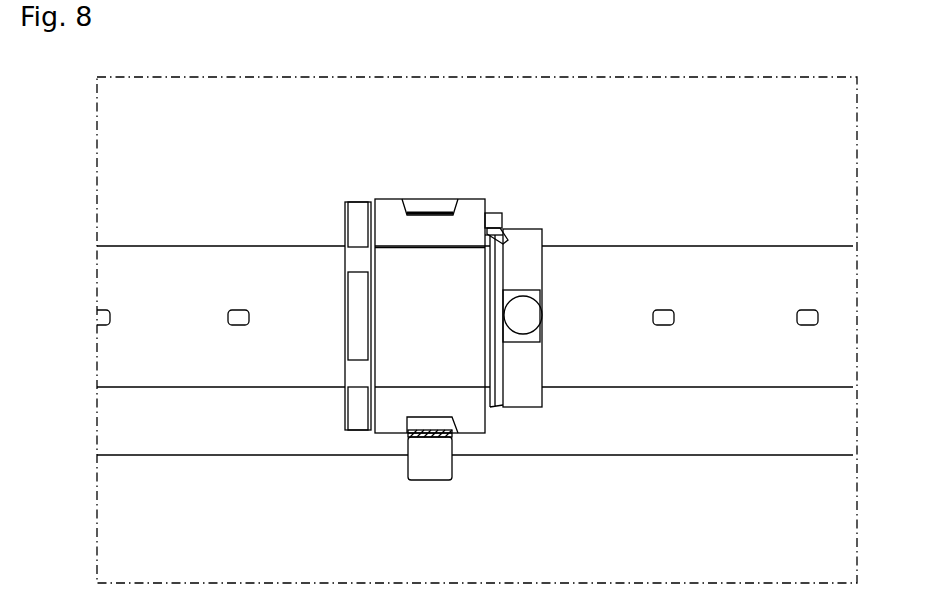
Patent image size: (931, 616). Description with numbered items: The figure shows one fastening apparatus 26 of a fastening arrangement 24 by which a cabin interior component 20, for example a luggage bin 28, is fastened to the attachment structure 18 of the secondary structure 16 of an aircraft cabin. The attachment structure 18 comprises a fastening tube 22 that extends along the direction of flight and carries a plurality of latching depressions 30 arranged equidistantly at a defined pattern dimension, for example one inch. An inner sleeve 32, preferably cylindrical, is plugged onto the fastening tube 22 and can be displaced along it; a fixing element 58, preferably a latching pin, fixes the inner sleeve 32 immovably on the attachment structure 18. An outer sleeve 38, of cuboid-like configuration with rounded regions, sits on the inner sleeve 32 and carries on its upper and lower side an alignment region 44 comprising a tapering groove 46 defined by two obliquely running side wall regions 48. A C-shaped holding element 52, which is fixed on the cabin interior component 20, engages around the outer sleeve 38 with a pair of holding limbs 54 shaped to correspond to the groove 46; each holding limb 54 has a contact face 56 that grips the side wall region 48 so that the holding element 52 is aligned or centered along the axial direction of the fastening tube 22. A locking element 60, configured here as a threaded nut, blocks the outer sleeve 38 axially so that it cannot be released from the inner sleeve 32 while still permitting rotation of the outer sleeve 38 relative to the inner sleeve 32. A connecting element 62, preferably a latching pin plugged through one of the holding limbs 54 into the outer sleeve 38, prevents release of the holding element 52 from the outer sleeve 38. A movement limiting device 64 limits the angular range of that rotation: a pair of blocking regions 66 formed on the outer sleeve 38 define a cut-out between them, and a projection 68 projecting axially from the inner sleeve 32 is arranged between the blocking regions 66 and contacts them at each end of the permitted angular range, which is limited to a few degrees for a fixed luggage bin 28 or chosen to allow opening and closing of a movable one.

The secondary structure 16 is at (475, 278).
The attachment structure 18 is at (475, 278).
The fastening tube 22 is at (160, 272).
The cabin interior component 20 is at (475, 466).
The luggage bin 28 is at (243, 425).
The fastening arrangement 24 is at (432, 277).
The fastening apparatus 26 is at (336, 92).
The latching depression 30 is at (237, 309).
The inner sleeve 32 is at (525, 277).
The outer sleeve 38 is at (332, 286).
The alignment region 44 is at (440, 148).
The groove 46 is at (430, 213).
The side wall region 48 is at (398, 468).
The contact face 56 is at (407, 428).
The holding element 52 is at (432, 203).
The holding limb 54 is at (401, 425).
The fixing element 58 is at (526, 319).
The locking element 60 is at (354, 327).
The connecting element 62 is at (443, 466).
The movement limiting device 64 is at (524, 189).
The blocking region 66 is at (505, 226).
The projection 68 is at (502, 226).